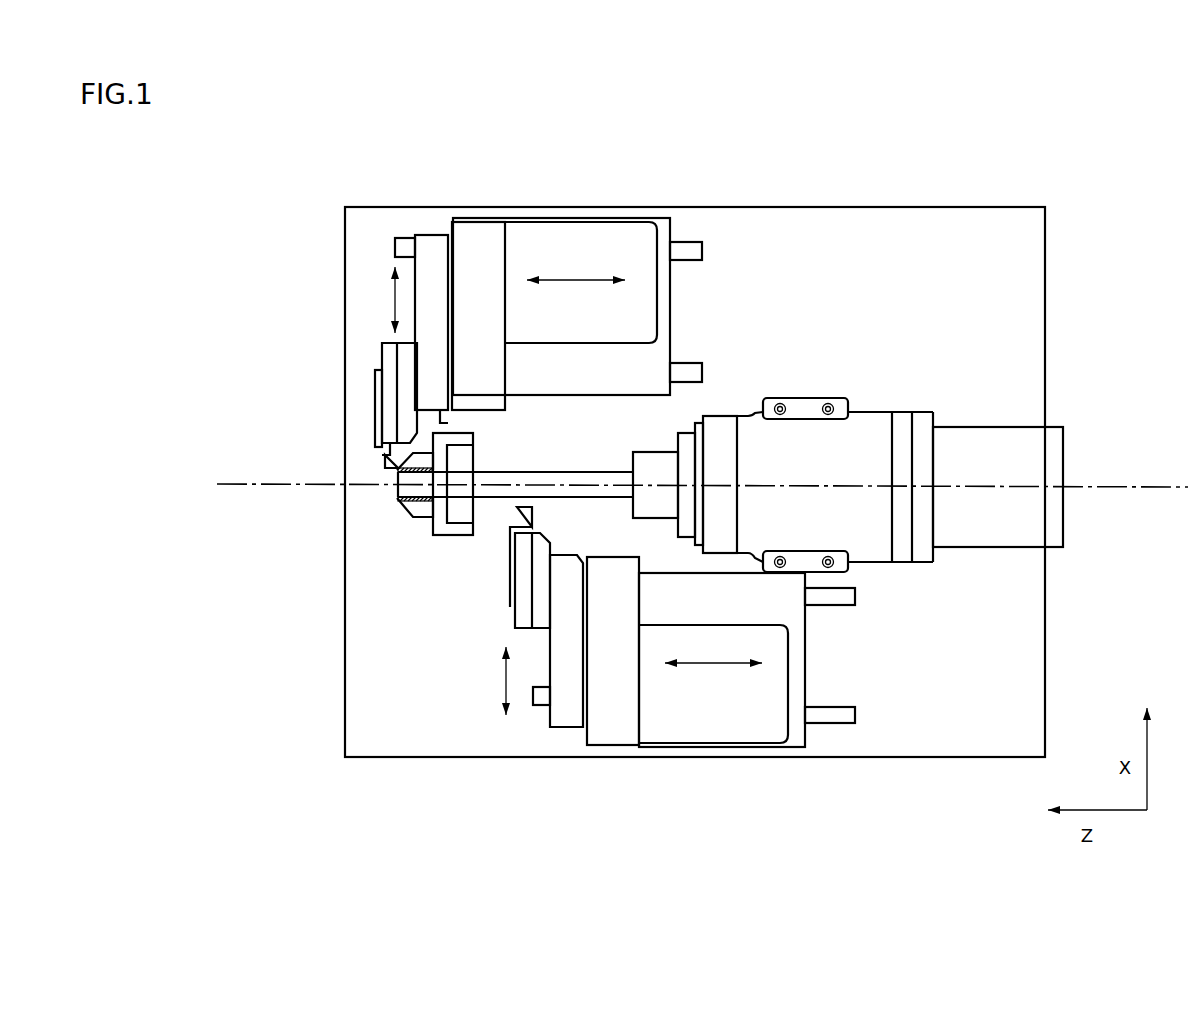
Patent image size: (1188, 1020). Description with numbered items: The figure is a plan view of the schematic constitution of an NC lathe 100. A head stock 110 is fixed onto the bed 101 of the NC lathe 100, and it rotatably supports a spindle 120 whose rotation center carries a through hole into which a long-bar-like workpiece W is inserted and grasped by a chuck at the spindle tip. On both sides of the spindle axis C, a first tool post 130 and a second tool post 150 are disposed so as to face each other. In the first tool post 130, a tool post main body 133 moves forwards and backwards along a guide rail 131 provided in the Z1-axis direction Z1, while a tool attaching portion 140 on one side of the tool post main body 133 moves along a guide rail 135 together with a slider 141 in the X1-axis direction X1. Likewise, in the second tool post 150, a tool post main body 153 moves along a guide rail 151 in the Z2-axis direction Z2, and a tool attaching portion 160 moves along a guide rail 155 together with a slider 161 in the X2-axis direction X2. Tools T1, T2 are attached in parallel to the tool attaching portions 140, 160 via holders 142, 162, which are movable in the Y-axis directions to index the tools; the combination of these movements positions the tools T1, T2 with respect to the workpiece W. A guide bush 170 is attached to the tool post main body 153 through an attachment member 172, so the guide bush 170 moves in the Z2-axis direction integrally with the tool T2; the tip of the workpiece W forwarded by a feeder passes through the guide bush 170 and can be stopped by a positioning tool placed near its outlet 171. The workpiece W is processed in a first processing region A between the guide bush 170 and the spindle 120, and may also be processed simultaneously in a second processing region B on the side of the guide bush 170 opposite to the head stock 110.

The NC lathe 100 is at (1072, 198).
The bed 101 is at (806, 265).
The head stock 110 is at (860, 455).
The spindle 120 is at (653, 460).
The first tool post 130 is at (658, 724).
The guide rail 131 is at (838, 718).
The tool post main body 133 is at (725, 727).
The guide rail 135 is at (580, 740).
The tool attaching portion 140 is at (375, 592).
The slider 141 is at (562, 717).
The holder 142 is at (510, 583).
The second tool post 150 is at (584, 259).
The guide rail 151 is at (683, 240).
The tool post main body 153 is at (588, 240).
The guide rail 155 is at (460, 236).
The tool attaching portion 160 is at (307, 401).
The slider 161 is at (428, 240).
The holder 162 is at (377, 417).
The guide bush 170 is at (318, 502).
The outlet 171 is at (397, 498).
The attachment member 172 is at (472, 434).
The workpiece W is at (548, 500).
The tool T1 is at (517, 510).
The tool T2 is at (377, 463).
The first processing region A is at (588, 453).
The second processing region B is at (377, 477).
The spindle axis C is at (1133, 488).
The X1-axis direction X1 is at (480, 681).
The Z1-axis direction Z1 is at (713, 677).
The X2-axis direction X2 is at (375, 300).
The Z2-axis direction Z2 is at (576, 294).